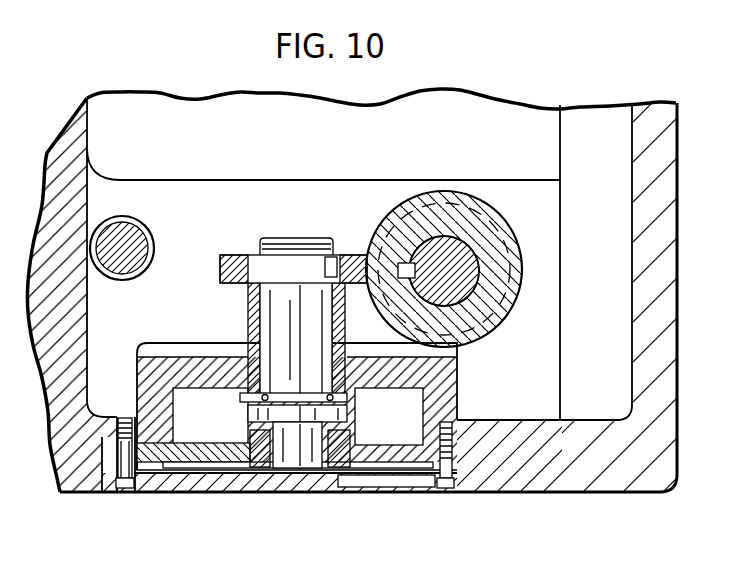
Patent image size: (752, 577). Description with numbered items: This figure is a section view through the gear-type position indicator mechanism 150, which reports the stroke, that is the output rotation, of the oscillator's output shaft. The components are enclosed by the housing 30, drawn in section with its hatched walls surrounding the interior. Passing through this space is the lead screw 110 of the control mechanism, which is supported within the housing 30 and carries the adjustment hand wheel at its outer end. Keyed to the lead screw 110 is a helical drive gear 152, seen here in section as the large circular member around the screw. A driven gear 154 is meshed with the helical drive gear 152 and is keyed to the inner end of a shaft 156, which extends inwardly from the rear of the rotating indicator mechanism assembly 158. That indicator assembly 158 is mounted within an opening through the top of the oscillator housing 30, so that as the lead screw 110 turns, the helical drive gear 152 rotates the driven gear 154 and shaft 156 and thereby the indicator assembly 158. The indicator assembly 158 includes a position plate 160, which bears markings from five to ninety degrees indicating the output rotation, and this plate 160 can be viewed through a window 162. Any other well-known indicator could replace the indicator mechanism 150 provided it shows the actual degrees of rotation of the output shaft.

The housing 30 is at (602, 480).
The lead screw 110 is at (460, 265).
The position indicator mechanism 150 is at (488, 285).
The helical drive gear 152 is at (467, 226).
The driven gear 154 is at (238, 262).
The shaft 156 is at (250, 318).
The rotating indicator mechanism assembly 158 is at (233, 500).
The position plate 160 is at (252, 463).
The window 162 is at (378, 505).